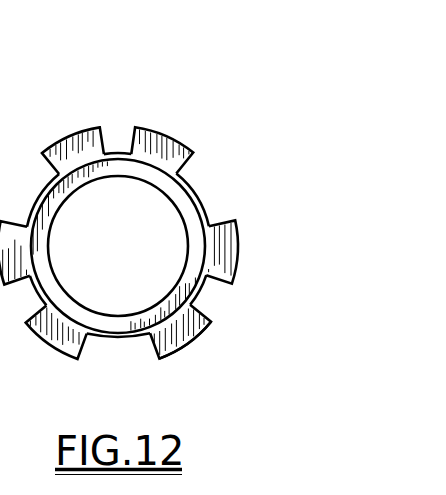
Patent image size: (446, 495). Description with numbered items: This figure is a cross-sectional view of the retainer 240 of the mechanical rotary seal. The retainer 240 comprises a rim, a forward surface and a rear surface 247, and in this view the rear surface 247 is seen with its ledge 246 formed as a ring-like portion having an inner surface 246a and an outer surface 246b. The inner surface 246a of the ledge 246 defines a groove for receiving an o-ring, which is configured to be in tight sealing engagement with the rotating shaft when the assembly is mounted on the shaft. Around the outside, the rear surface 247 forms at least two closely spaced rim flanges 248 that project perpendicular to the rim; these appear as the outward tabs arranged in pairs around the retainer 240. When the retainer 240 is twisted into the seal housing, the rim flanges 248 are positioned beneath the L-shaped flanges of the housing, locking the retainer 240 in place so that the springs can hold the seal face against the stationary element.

The retainer 240 is at (112, 86).
The ledge 246 is at (200, 280).
The inner surface 246a is at (185, 340).
The outer surface 246b is at (203, 244).
The rear surface 247 is at (200, 203).
The rim flanges 248 is at (160, 145).